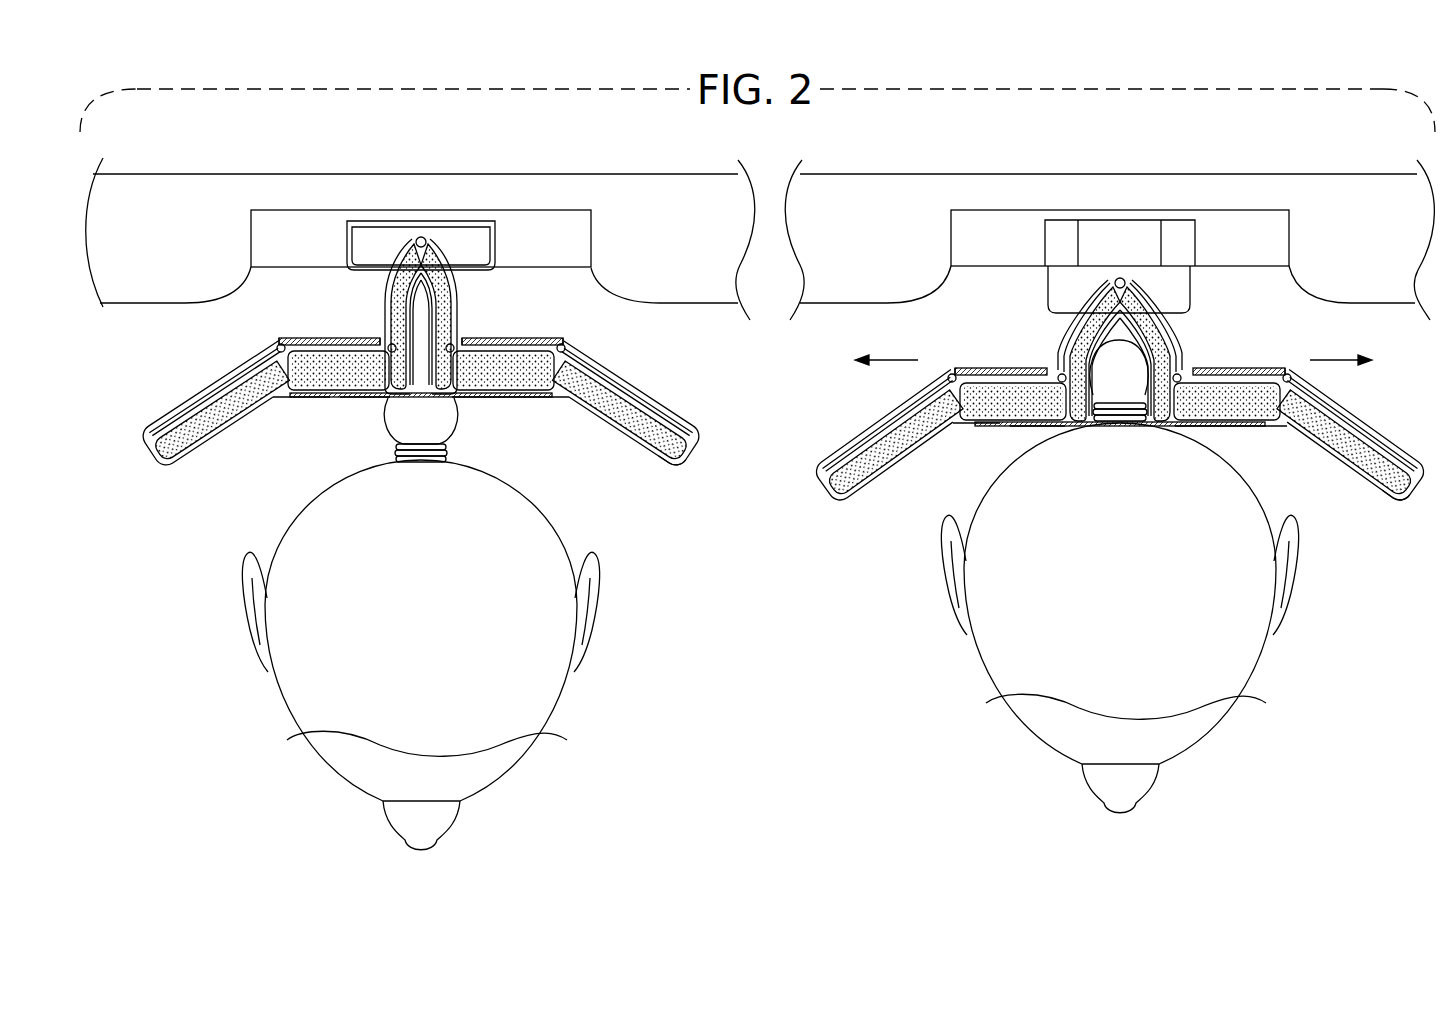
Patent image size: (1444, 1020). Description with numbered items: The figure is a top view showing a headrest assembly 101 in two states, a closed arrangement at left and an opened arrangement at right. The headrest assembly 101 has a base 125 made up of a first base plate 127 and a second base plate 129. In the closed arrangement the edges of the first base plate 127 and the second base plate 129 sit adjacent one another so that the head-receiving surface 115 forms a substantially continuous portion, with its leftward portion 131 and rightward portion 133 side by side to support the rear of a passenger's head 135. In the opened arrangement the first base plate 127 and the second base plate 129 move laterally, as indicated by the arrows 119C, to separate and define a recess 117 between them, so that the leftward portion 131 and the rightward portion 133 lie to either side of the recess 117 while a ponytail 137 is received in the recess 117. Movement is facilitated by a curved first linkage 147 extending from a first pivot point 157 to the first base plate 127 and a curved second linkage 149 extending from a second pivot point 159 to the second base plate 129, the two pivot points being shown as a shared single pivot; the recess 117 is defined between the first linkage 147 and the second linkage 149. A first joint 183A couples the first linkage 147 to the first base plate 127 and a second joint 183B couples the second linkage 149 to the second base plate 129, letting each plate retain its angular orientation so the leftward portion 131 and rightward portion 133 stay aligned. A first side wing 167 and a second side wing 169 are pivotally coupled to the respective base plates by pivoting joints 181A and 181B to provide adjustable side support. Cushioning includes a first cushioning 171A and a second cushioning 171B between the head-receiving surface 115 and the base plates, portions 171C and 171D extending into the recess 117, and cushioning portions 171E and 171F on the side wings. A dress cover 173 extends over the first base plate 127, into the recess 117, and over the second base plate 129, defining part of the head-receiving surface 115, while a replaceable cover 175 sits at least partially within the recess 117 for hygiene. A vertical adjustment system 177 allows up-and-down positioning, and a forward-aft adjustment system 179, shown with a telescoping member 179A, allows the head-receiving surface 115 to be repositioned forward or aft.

The headrest assembly 101 is at (203, 534).
The head-receiving surface 115 is at (302, 412).
The recess 117 is at (1113, 330).
The arrows 119C is at (895, 360).
The base 125 is at (158, 347).
The first base plate 127 is at (353, 347).
The second base plate 129 is at (493, 348).
The leftward portion 131 is at (368, 415).
The rightward portion 133 is at (477, 415).
The passenger's head 135 is at (406, 599).
The ponytail 137 is at (406, 425).
The first linkage 147 is at (405, 262).
The second linkage 149 is at (442, 263).
The first pivot point 157 is at (412, 245).
The second pivot point 159 is at (430, 243).
The first side wing 167 is at (163, 433).
The second side wing 169 is at (682, 433).
The first cushioning 171A is at (325, 370).
The second cushioning 171B is at (522, 370).
The cushioning portion in recess 171C is at (390, 315).
The cushioning portion in recess 171D is at (443, 317).
The side wing cushioning portion 171E is at (220, 403).
The side wing cushioning portion 171F is at (620, 403).
The dress cover 173 is at (667, 470).
The replaceable cover 175 is at (517, 398).
The vertical adjustment system 177 is at (962, 237).
The forward-aft adjustment system 179 is at (1135, 227).
The telescoping member 179A is at (1162, 237).
The pivoting joint 181A is at (270, 346).
The pivoting joint 181B is at (570, 347).
The first joint 183A is at (1058, 377).
The second joint 183B is at (1180, 370).